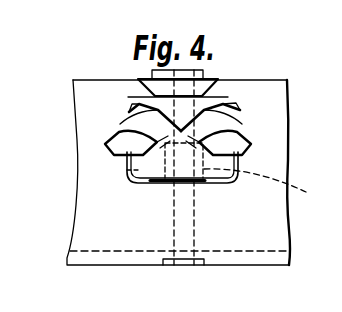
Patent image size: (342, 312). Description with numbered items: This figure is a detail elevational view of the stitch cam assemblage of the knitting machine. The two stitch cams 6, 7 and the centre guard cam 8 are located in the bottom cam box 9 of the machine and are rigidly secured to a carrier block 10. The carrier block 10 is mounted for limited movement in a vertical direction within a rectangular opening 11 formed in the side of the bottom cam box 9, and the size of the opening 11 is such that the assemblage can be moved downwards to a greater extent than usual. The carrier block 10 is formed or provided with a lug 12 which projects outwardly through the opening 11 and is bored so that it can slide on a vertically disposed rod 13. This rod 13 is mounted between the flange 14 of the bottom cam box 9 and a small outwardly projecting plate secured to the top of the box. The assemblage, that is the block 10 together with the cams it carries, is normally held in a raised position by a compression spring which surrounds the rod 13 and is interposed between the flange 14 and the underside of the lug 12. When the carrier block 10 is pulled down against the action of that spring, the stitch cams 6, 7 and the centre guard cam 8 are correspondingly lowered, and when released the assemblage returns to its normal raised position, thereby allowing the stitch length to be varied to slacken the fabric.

The stitch cam 6 is at (125, 138).
The stitch cam 7 is at (238, 143).
The centre guard cam 8 is at (143, 165).
The bottom cam box 9 is at (276, 88).
The carrier block 10 is at (178, 125).
The rectangular opening 11 is at (140, 186).
The lug 12 is at (232, 189).
The vertically disposed rod 13 is at (199, 224).
The flange 14 is at (290, 251).